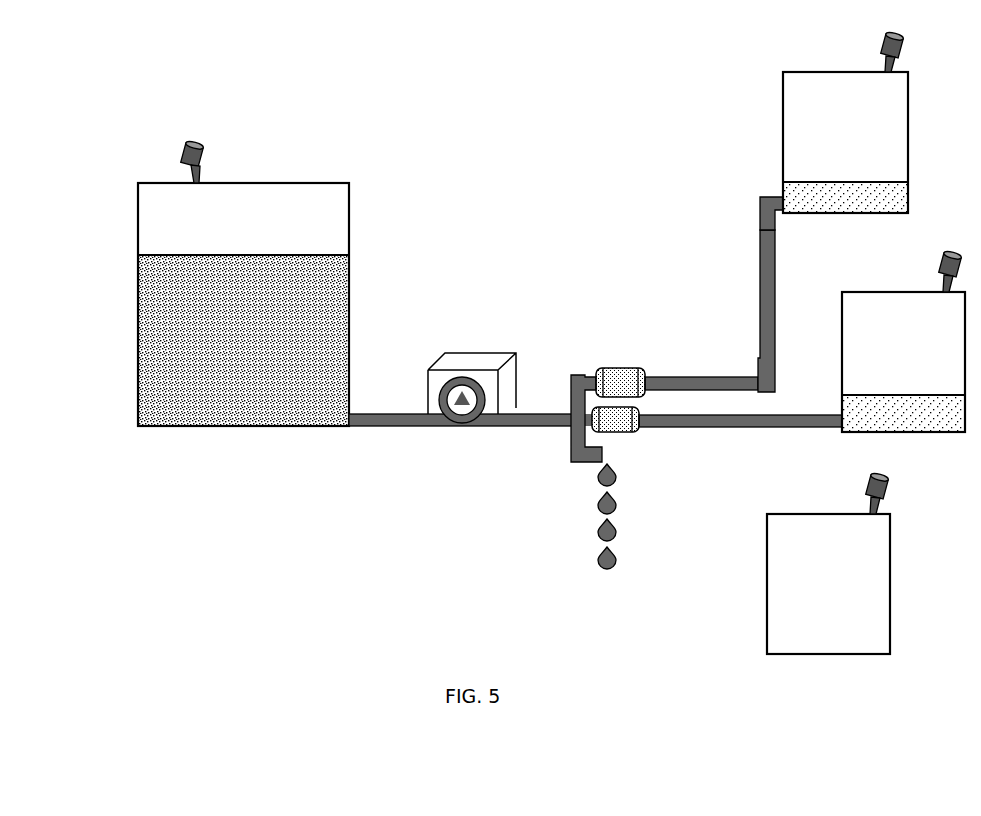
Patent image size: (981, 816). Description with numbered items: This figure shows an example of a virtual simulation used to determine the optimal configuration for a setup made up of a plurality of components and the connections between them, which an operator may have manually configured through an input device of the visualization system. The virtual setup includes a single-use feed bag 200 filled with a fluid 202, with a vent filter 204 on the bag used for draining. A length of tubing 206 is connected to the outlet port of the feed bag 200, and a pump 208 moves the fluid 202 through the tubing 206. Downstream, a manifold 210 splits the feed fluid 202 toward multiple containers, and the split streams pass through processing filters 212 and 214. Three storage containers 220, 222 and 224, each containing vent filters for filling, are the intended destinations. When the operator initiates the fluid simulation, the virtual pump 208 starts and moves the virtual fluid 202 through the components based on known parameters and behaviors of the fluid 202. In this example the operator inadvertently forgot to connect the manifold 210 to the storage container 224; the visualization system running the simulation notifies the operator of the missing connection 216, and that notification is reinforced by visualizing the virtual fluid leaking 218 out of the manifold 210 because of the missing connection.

The single-use feed bag 200 is at (333, 202).
The fluid 202 is at (328, 306).
The vent filter 204 is at (193, 136).
The tubing 206 is at (393, 419).
The pump 208 is at (496, 350).
The manifold 210 is at (578, 368).
The processing filter 212 is at (631, 366).
The processing filter 214 is at (640, 431).
The missing connection 216 is at (604, 456).
The virtual fluid leaking 218 is at (618, 536).
The storage container 220 is at (800, 135).
The storage container 222 is at (862, 327).
The storage container 224 is at (785, 553).